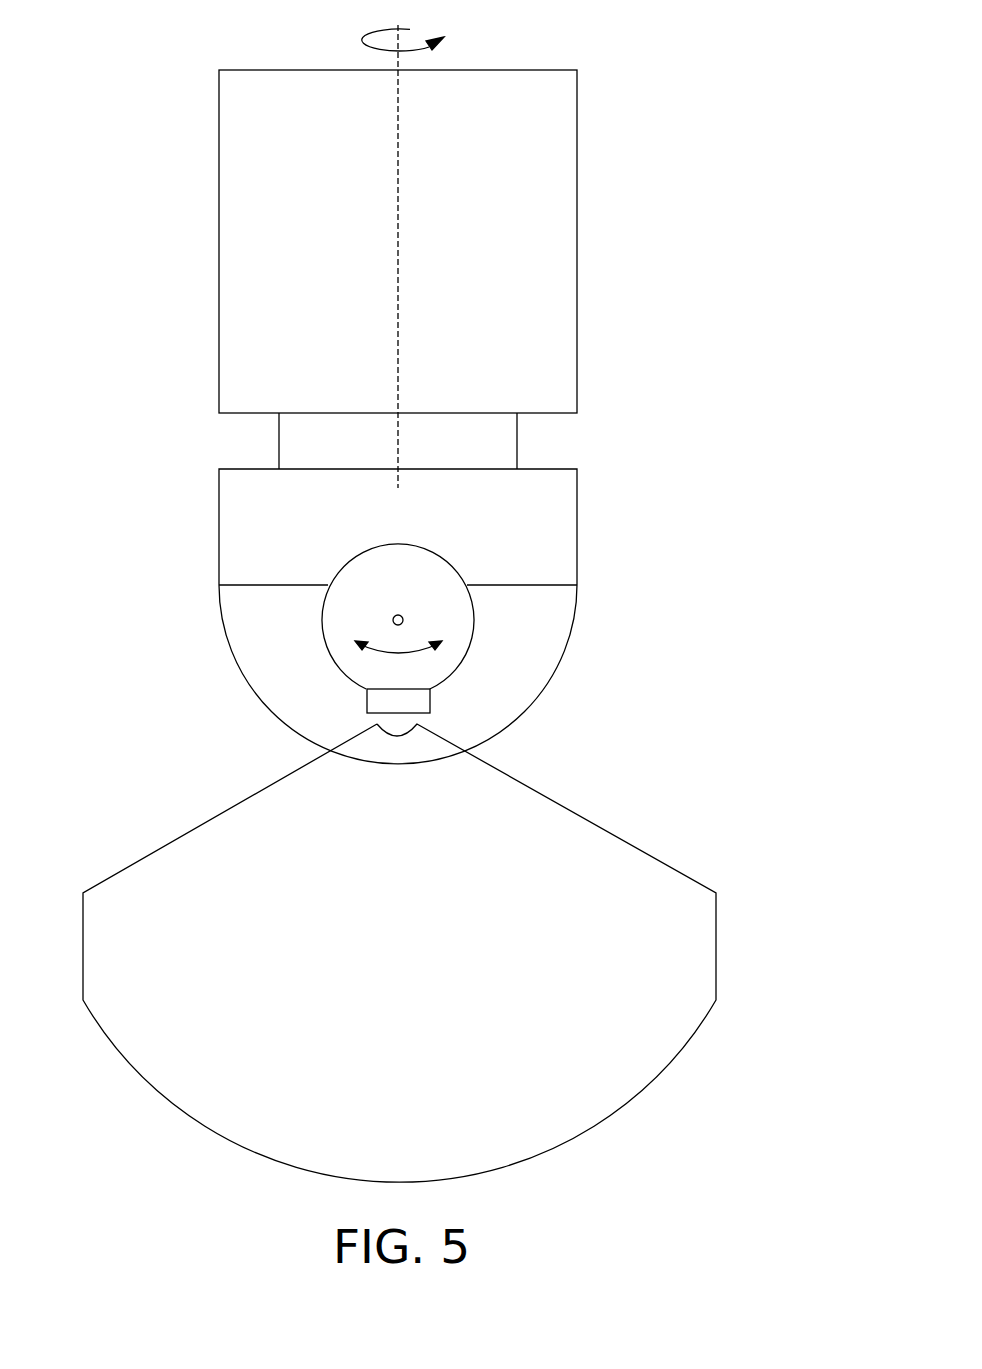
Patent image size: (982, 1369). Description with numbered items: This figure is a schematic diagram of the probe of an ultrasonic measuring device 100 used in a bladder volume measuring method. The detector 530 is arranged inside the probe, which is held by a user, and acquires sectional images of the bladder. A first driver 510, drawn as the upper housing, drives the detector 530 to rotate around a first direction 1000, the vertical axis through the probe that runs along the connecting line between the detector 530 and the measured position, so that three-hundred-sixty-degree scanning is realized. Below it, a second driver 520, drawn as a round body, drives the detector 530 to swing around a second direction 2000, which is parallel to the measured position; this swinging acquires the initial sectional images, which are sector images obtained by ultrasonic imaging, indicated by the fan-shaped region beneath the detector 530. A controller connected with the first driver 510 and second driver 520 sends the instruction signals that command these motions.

The lighting device 100 is at (690, 41).
The first direction 1000 is at (398, 261).
The second direction 2000 is at (392, 621).
The first driver 510 is at (467, 293).
The second driver 520 is at (458, 616).
The detector 530 is at (481, 722).